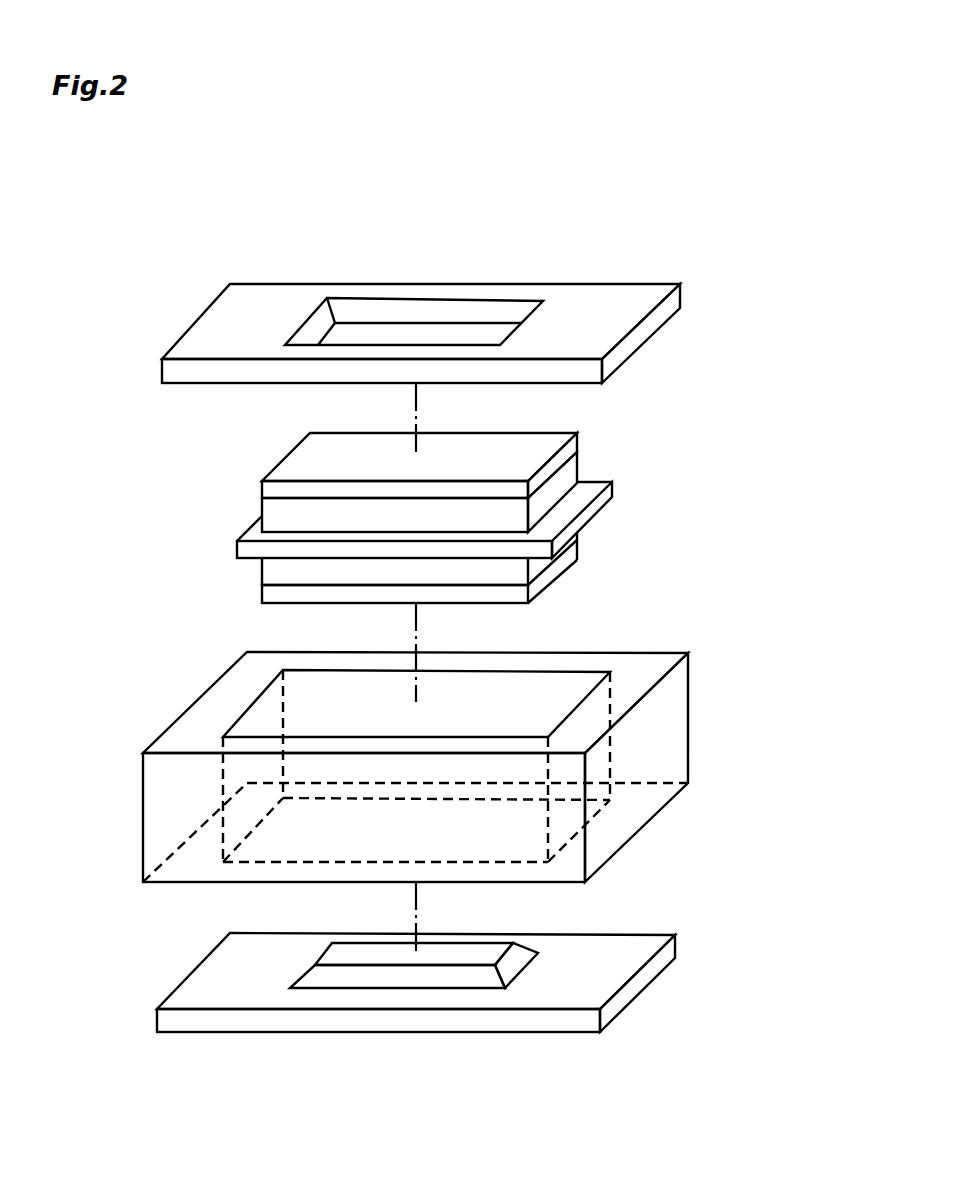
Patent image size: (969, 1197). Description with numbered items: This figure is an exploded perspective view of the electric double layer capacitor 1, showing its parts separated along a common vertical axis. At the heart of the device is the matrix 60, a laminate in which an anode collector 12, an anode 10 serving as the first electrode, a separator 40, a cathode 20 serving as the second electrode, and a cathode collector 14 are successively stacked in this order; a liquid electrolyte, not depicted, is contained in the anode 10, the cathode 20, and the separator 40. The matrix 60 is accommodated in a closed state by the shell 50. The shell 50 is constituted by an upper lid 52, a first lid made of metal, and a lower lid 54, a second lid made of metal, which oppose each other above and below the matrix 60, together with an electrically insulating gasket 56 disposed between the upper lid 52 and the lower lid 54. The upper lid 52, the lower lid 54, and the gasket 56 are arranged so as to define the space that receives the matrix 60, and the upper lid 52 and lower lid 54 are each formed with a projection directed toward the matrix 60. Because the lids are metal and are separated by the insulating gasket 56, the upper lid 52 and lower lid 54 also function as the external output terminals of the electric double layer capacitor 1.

The electric double layer capacitor 1 is at (783, 164).
The shell 50 is at (733, 878).
The upper lid 52 is at (617, 310).
The gasket 56 is at (625, 683).
The lower lid 54 is at (613, 960).
The matrix 60 is at (140, 448).
The anode collector 12 is at (293, 470).
The anode 10 is at (265, 514).
The separator 40 is at (250, 550).
The cathode 20 is at (268, 563).
The cathode collector 14 is at (274, 588).